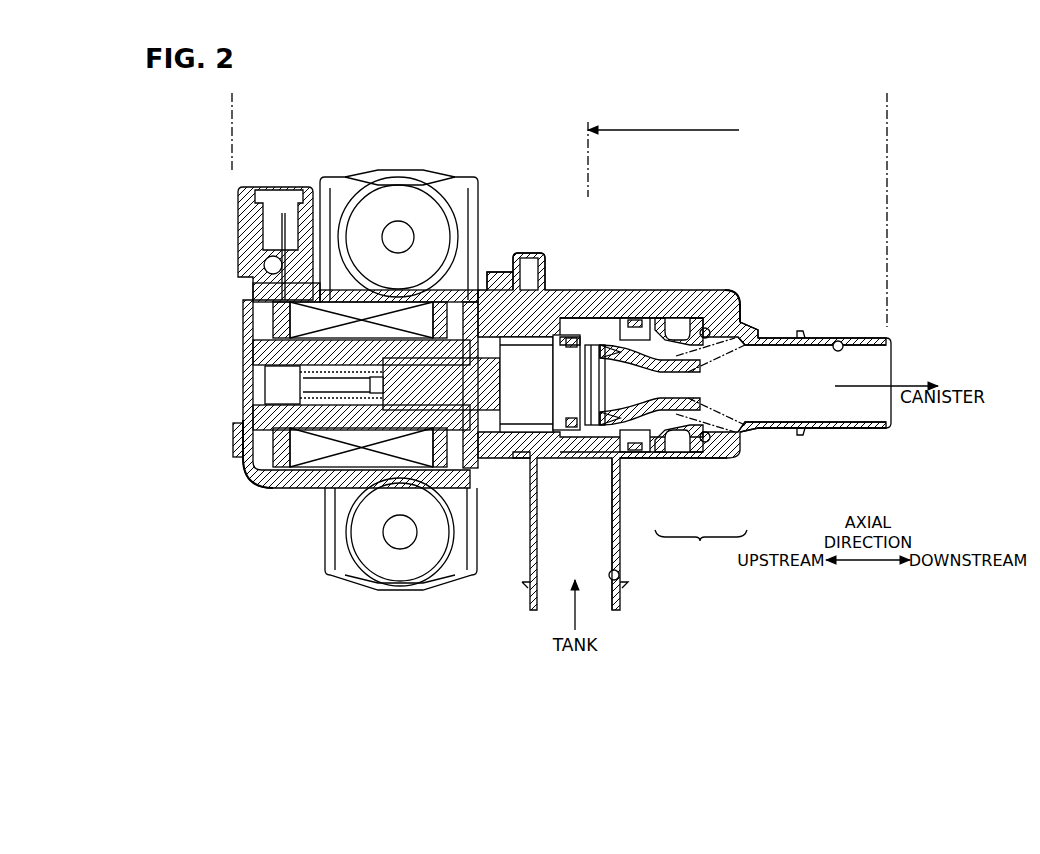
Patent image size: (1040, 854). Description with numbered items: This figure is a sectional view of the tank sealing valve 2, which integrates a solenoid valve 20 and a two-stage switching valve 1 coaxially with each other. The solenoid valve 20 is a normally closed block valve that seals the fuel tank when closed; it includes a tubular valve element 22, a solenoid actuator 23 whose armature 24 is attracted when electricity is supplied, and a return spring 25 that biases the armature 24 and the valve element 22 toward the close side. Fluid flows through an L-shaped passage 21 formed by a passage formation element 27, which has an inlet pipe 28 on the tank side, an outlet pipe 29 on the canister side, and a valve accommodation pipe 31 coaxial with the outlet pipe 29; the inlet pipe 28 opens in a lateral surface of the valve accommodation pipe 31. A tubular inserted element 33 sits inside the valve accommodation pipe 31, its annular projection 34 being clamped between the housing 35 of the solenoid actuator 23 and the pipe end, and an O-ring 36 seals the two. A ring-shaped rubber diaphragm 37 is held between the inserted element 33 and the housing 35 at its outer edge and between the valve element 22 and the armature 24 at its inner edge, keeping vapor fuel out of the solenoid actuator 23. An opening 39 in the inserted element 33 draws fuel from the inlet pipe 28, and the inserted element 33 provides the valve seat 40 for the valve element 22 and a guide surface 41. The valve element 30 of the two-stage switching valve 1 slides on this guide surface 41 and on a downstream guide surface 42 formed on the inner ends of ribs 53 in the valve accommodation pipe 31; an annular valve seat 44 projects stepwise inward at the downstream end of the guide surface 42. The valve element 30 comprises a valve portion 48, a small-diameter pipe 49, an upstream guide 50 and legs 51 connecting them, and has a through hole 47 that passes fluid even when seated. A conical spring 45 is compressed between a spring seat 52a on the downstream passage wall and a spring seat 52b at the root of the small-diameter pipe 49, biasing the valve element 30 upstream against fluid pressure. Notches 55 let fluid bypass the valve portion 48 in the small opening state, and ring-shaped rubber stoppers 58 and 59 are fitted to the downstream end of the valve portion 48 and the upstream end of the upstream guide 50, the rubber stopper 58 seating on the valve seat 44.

The two-stage switching valve 1 is at (887, 130).
The tank sealing valve 2 is at (232, 101).
The solenoid valve 20 is at (588, 130).
The L-shaped passage 21 is at (839, 343).
The valve element 22 is at (540, 280).
The solenoid actuator 23 is at (368, 380).
The armature 24 is at (275, 312).
The return spring 25 is at (313, 362).
The passage formation element 27 is at (701, 544).
The inlet pipe 28 is at (618, 470).
The outlet pipe 29 is at (815, 432).
The valve element 30 is at (668, 228).
The valve accommodation pipe 31 is at (702, 458).
The inserted element 33 is at (521, 268).
The annular projection 34 is at (486, 292).
The housing 35 is at (258, 478).
The O-ring 36 is at (598, 450).
The diaphragm 37 is at (485, 462).
The opening 39 is at (556, 445).
The valve seat 40 is at (590, 440).
The guide surface 41 is at (594, 350).
The guide surface 42 is at (712, 330).
The valve seat 44 is at (738, 330).
The spring 45 is at (700, 362).
The through hole 47 is at (652, 375).
The valve portion 48 is at (675, 332).
The small-diameter pipe 49 is at (704, 406).
The upstream guide 50 is at (580, 340).
The legs 51 is at (612, 425).
The spring seat 52a is at (740, 345).
The spring seat 52b is at (656, 440).
The ribs 53 is at (662, 336).
The notches 55 is at (727, 318).
The rubber stopper 58 is at (694, 340).
The rubber stopper 59 is at (560, 345).